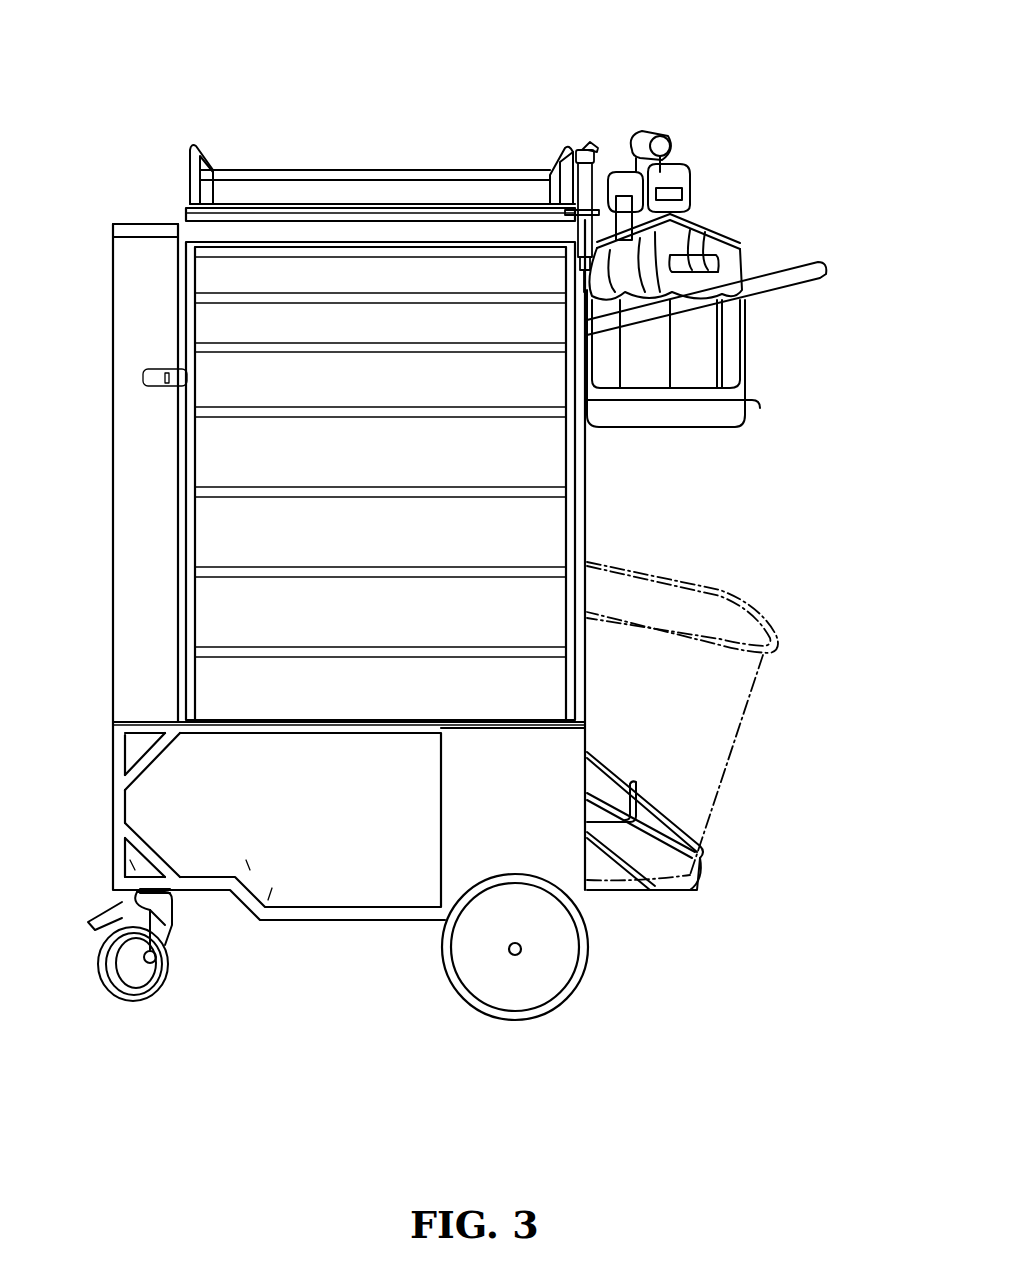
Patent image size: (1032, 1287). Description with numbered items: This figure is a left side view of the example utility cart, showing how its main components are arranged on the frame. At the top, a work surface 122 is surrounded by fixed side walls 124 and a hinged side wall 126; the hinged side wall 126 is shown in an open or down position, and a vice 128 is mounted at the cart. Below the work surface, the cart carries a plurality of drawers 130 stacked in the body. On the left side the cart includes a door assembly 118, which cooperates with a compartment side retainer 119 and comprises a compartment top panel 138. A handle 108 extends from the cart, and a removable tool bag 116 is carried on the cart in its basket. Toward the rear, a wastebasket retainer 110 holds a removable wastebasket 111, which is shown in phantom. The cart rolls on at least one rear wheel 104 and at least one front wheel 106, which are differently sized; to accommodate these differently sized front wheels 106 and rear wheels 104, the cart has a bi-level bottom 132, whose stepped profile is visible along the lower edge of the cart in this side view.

The rear wheel 104 is at (590, 952).
The front wheel 106 is at (172, 943).
The handle 108 is at (748, 268).
The wastebasket retainer 110 is at (705, 851).
The removable wastebasket 111 is at (726, 600).
The removable tool bag 116 is at (722, 130).
The door assembly 118 is at (130, 670).
The compartment side retainer 119 is at (152, 376).
The work surface 122 is at (356, 188).
The fixed side walls 124 is at (198, 150).
The hinged side wall 126 is at (470, 214).
The vice 128 is at (584, 143).
The drawers 130 is at (538, 440).
The bi-level bottom 132 is at (310, 928).
The compartment top panel 138 is at (152, 232).